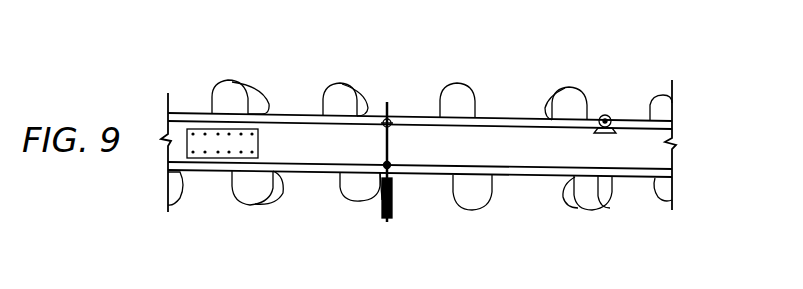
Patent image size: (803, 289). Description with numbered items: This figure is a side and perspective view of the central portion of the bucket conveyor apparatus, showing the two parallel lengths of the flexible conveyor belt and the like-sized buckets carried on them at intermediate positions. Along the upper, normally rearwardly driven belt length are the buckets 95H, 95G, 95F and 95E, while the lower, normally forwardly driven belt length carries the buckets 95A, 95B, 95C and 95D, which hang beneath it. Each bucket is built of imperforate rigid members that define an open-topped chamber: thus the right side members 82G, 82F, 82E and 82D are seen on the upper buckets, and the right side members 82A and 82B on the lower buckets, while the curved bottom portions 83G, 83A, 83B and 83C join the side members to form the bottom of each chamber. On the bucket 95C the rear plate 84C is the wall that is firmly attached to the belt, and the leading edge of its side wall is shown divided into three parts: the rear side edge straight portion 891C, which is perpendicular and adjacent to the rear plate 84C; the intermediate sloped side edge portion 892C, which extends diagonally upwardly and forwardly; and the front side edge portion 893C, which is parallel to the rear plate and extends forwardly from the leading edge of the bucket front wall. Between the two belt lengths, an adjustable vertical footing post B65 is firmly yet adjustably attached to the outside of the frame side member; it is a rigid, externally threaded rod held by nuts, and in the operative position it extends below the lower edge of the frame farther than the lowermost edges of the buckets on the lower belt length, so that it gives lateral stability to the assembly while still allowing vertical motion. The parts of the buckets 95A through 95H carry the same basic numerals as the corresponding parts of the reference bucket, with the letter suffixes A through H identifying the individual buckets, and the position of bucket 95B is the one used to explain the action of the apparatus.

The right side member 82G is at (222, 96).
The curved bottom portion 83G is at (259, 106).
The bucket 95H is at (231, 79).
The right side member 82F is at (343, 100).
The bucket 95G is at (339, 82).
The right side member 82E is at (462, 103).
The bucket 95F is at (453, 83).
The right side member 82D is at (576, 104).
The bucket 95E is at (568, 87).
The adjustable vertical footing post B65 is at (390, 133).
The right side member 82A is at (241, 185).
The curved bottom portion 83A is at (278, 188).
The bucket 95A is at (258, 207).
The right side member 82B is at (362, 191).
The curved bottom portion 83B is at (388, 193).
The bucket 95B is at (377, 200).
The rear side edge straight portion 891C is at (493, 182).
The intermediate sloped side edge portion 892C is at (491, 201).
The front side edge portion 893C is at (479, 212).
The bucket 95C is at (463, 206).
The rear plate 84C is at (568, 212).
The curved bottom portion 83C is at (605, 202).
The bucket 95D is at (602, 212).